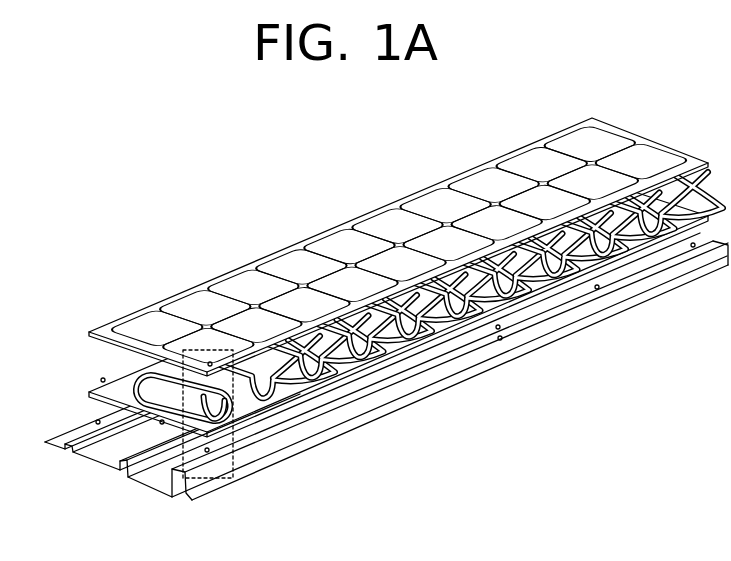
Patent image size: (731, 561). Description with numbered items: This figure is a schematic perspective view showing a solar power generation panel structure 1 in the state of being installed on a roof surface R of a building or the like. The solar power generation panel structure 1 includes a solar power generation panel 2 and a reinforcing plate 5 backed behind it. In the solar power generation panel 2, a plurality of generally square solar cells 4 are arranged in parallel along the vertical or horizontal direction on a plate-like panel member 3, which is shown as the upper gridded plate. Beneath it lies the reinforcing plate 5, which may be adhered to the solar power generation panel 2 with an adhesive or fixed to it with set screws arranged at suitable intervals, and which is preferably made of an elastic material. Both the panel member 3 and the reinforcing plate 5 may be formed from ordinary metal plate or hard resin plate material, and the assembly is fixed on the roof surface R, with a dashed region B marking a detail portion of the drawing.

The solar power generation panel structure 1 is at (85, 328).
The solar power generation panel 2 is at (193, 279).
The panel member 3 is at (626, 132).
The solar cells 4 is at (337, 243).
The reinforcing plate 5 is at (678, 211).
The roof surface R is at (88, 463).
The detail region B is at (241, 437).